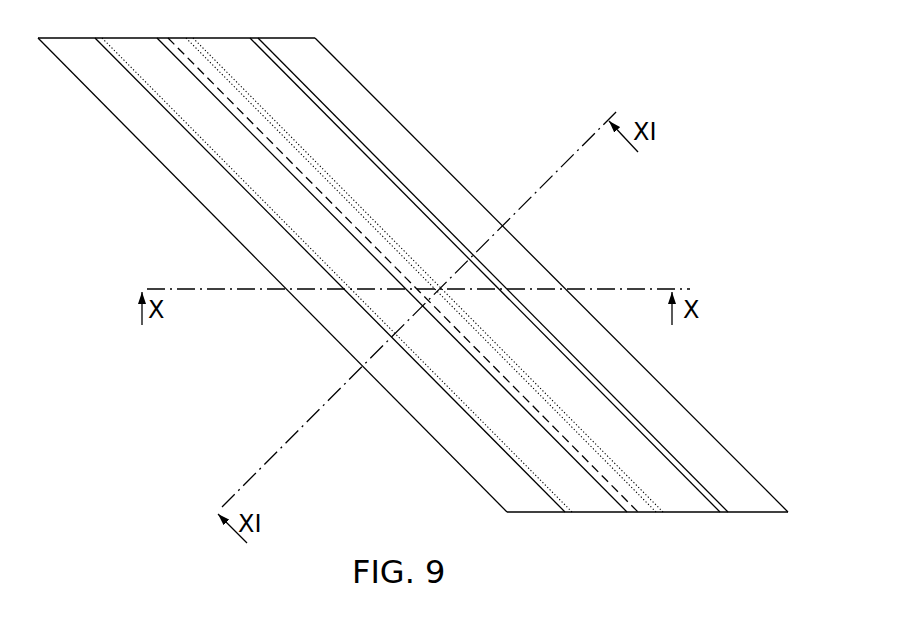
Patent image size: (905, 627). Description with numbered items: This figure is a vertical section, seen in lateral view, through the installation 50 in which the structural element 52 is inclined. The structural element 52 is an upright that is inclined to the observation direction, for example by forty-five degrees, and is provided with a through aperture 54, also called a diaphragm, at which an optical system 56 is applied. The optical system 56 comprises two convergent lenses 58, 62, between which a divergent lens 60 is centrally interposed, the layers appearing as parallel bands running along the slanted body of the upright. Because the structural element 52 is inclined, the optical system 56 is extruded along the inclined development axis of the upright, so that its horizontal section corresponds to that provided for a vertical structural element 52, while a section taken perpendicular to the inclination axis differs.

The installation 50 is at (489, 151).
The structural element 52 is at (628, 438).
The through aperture 54 is at (556, 405).
The optical system 56 is at (386, 103).
The convergent lens 58 is at (473, 455).
The divergent lens 60 is at (618, 480).
The convergent lens 62 is at (733, 473).